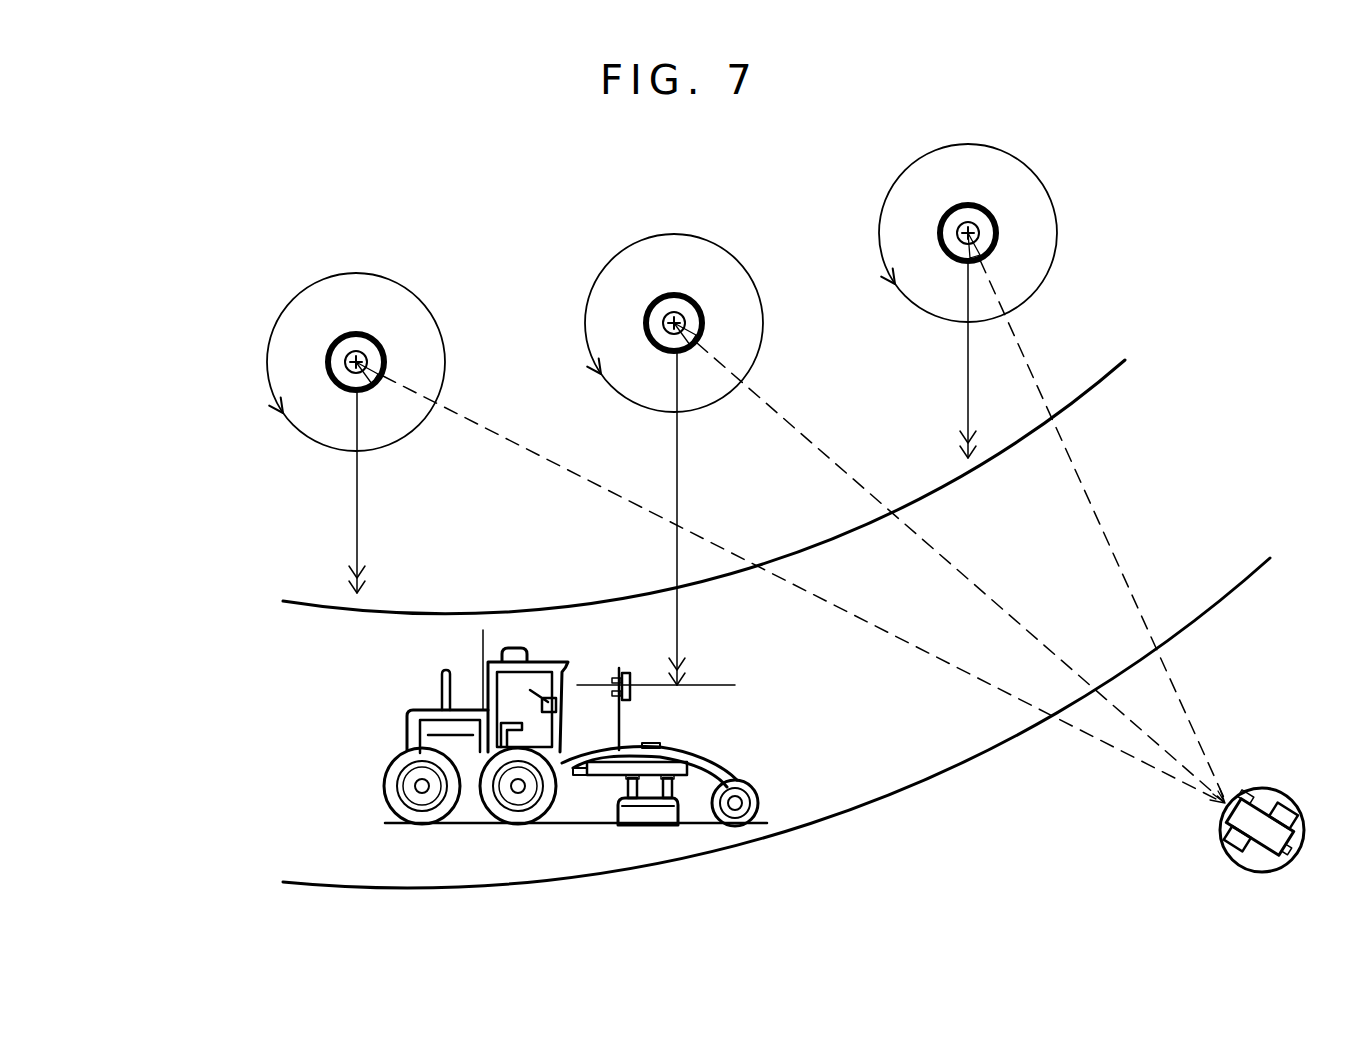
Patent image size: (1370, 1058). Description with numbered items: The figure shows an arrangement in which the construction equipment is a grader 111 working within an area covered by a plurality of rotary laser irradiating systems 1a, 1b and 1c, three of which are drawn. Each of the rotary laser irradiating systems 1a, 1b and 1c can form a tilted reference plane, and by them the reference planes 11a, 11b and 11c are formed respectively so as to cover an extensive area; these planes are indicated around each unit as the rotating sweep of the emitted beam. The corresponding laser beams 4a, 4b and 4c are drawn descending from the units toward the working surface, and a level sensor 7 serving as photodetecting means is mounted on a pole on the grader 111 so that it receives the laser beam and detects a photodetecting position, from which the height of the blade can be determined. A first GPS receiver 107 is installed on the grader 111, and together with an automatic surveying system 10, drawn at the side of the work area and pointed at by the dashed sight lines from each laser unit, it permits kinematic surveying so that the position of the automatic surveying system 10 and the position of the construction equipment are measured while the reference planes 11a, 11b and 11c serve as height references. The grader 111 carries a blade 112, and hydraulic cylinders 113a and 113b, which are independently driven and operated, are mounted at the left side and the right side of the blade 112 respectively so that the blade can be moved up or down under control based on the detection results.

The rotary laser irradiating system 1a is at (985, 208).
The rotary laser irradiating system 1b is at (674, 295).
The rotary laser irradiating system 1c is at (356, 334).
The reference plane 11a is at (1032, 238).
The reference plane 11b is at (705, 278).
The reference plane 11c is at (398, 312).
The laser beam 4a is at (967, 362).
The laser beam 4b is at (678, 487).
The laser beam 4c is at (360, 537).
The level sensor 7 is at (632, 697).
The automatic surveying system 10 is at (1291, 787).
The first GPS receiver 107 is at (517, 652).
The grader 111 is at (396, 741).
The blade 112 is at (658, 815).
The hydraulic cylinder 113a is at (627, 778).
The hydraulic cylinder 113b is at (680, 780).